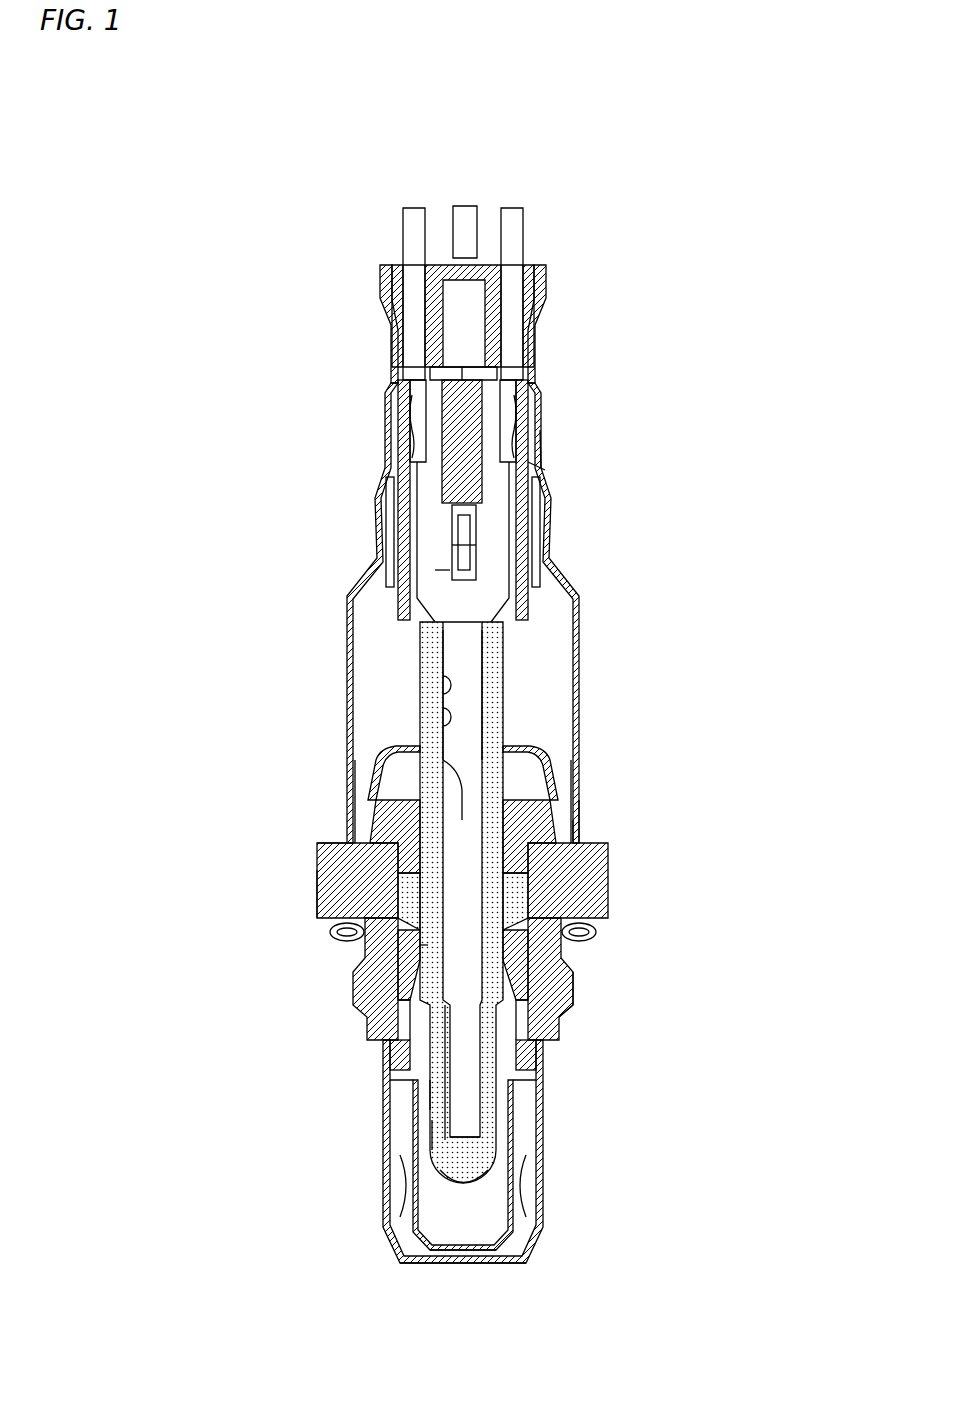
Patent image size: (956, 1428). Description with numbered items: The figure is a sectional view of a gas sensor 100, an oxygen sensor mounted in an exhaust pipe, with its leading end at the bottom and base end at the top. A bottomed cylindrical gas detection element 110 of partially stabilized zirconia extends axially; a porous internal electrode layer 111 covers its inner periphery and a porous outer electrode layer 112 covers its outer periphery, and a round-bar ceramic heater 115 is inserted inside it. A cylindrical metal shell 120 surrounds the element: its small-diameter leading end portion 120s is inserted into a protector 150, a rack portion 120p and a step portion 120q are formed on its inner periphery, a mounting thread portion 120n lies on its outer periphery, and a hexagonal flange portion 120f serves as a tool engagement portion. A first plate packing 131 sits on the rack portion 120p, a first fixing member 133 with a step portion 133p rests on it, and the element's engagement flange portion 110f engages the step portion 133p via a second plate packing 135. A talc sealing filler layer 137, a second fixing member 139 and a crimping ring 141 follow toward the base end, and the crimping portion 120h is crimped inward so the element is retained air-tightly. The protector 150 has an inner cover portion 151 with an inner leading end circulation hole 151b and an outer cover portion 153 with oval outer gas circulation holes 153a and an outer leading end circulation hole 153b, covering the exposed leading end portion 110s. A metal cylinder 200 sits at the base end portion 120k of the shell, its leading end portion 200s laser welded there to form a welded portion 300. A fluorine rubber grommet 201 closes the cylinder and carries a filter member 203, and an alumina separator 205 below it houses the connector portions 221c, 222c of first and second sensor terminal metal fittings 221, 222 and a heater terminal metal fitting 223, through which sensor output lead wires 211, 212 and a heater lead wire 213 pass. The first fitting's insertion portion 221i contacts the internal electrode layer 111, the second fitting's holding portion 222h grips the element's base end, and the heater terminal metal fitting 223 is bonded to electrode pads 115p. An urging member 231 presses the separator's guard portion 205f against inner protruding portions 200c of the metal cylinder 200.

The gas sensor 100 is at (241, 176).
The gas detection element 110 is at (430, 745).
The engagement flange portion 110f is at (412, 955).
The leading end portion 110s is at (430, 1096).
The internal electrode layer 111 is at (445, 1150).
The outer electrode layer 112 is at (432, 1133).
The ceramic heater 115 is at (462, 832).
The electrode pads 115p is at (445, 574).
The metal shell 120 is at (312, 834).
The hexagonal flange portion 120f is at (317, 890).
The crimping portion 120h is at (545, 742).
The base end portion 120k is at (580, 808).
The mounting thread portion 120n is at (353, 983).
The rack portion 120p is at (400, 1012).
The step portion 120q is at (342, 846).
The leading end portion 120s is at (388, 1065).
The first plate packing 131 is at (558, 1030).
The first fixing member 133 is at (560, 1012).
The step portion 133p is at (560, 990).
The second plate packing 135 is at (556, 963).
The sealing filler layer 137 is at (517, 895).
The second fixing member 139 is at (545, 778).
The crimping ring 141 is at (545, 750).
The protector 150 is at (640, 1103).
The inner cover portion 151 is at (513, 1145).
The inner leading end circulation hole 151b is at (455, 1268).
The outer cover portion 153 is at (543, 1114).
The outer gas circulation holes 153a is at (543, 1194).
The outer leading end circulation hole 153b is at (458, 1268).
The metal cylinder 200 is at (347, 626).
The inner protruding portions 200c is at (542, 442).
The leading end portion 200s is at (578, 832).
The grommet 201 is at (552, 358).
The filter member 203 is at (537, 285).
The separator 205 is at (530, 540).
The guard portion 205f is at (545, 470).
The sensor output lead wire 211 is at (515, 214).
The sensor output lead wire 212 is at (409, 214).
The heater lead wire 213 is at (455, 208).
The first sensor terminal metal fitting 221 is at (510, 600).
The connector portion 221c is at (520, 420).
The insertion portion 221i is at (468, 660).
The second sensor terminal metal fitting 222 is at (420, 510).
The connector portion 222c is at (418, 420).
The holding portion 222h is at (440, 680).
The heater terminal metal fitting 223 is at (468, 553).
The urging member 231 is at (546, 500).
The welded portion 300 is at (578, 818).